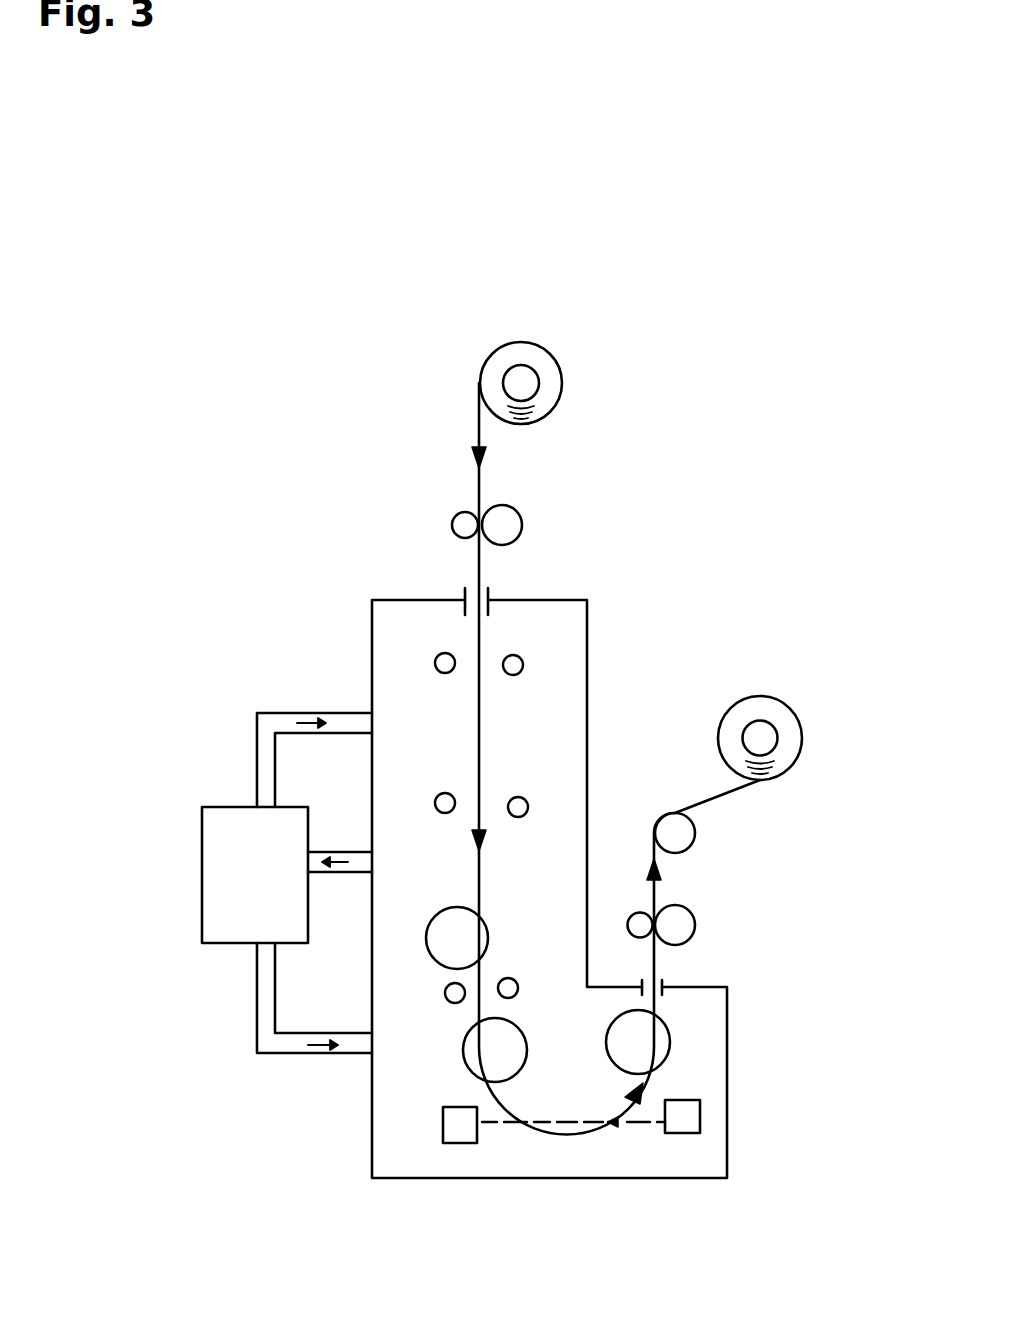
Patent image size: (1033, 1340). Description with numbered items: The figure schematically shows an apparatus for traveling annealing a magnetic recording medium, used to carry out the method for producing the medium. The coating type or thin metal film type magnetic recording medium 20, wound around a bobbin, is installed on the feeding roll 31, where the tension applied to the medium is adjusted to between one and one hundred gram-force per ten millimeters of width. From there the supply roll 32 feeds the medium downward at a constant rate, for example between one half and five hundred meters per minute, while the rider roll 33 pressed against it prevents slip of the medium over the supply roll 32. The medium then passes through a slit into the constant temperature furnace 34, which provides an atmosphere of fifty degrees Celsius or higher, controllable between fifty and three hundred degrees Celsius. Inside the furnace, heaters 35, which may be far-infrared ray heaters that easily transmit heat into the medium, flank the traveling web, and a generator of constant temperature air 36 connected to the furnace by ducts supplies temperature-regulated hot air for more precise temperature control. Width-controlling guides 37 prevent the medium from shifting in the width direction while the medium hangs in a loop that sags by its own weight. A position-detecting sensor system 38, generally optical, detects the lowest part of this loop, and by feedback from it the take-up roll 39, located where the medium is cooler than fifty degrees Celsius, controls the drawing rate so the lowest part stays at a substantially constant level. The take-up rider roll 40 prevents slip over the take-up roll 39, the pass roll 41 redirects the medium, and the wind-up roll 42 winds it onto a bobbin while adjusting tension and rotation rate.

The magnetic recording medium 20 is at (478, 433).
The feeding roll 31 is at (527, 383).
The supply roll 32 is at (510, 522).
The rider roll 33 is at (457, 522).
The constant temperature furnace 34 is at (533, 695).
The heaters 35 is at (437, 660).
The generator of constant temperature air 36 is at (200, 842).
The width-controlling guides 37 is at (427, 948).
The position-detecting sensor system 38 is at (452, 1145).
The take-up roll 39 is at (683, 923).
The take-up rider roll 40 is at (635, 920).
The pass roll 41 is at (683, 835).
The wind-up roll 42 is at (765, 737).